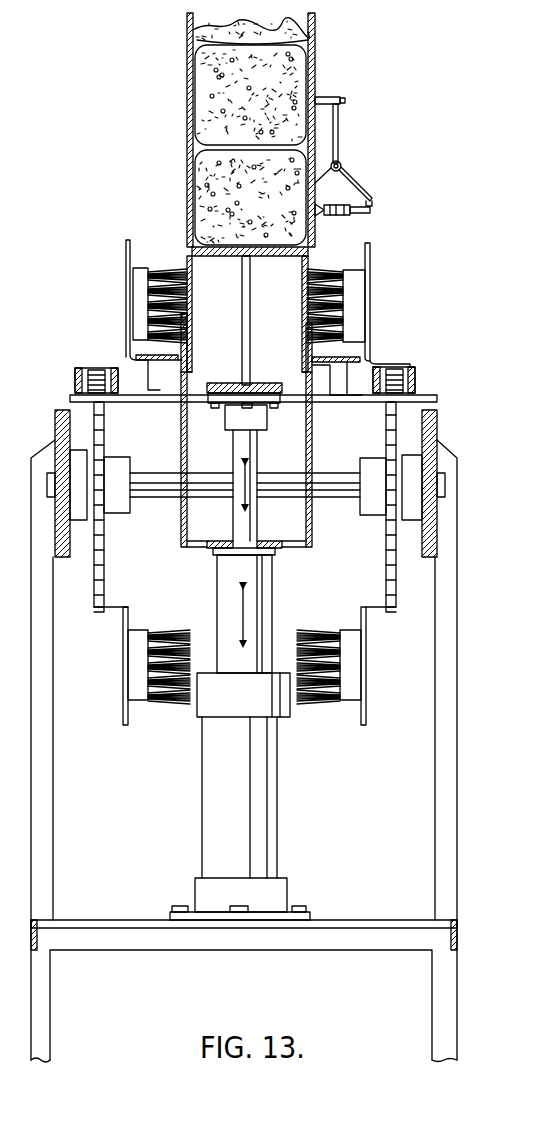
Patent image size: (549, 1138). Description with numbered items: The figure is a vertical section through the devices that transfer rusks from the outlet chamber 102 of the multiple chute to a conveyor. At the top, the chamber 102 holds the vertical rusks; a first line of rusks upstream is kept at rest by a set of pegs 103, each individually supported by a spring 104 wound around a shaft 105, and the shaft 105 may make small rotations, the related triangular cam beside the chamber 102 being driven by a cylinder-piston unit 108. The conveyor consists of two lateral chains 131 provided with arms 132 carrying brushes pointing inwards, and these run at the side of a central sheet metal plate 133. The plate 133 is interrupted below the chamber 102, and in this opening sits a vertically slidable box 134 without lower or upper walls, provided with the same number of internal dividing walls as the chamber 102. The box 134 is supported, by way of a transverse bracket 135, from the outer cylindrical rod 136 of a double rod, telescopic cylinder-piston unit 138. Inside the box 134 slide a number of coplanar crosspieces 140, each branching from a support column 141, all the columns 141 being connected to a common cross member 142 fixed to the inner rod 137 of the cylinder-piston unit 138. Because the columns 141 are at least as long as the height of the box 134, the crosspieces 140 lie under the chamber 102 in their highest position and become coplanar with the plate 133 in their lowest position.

The outlet chamber 102 is at (184, 134).
The pegs 103 is at (330, 98).
The spring 104 is at (339, 121).
The shaft 105 is at (340, 163).
The cylinder-piston unit 108 is at (343, 216).
The lateral chains 131 is at (96, 371).
The arms 132 is at (125, 251).
The central sheet metal plate 133 is at (350, 360).
The vertically slidable box 134 is at (188, 247).
The transverse bracket 135 is at (181, 535).
The outer cylindrical rod 136 is at (258, 612).
The inner rod 137 is at (233, 440).
The double rod cylinder-piston unit 138 is at (270, 834).
The crosspieces 140 is at (208, 257).
The support columns 141 is at (251, 308).
The common cross member 142 is at (284, 389).